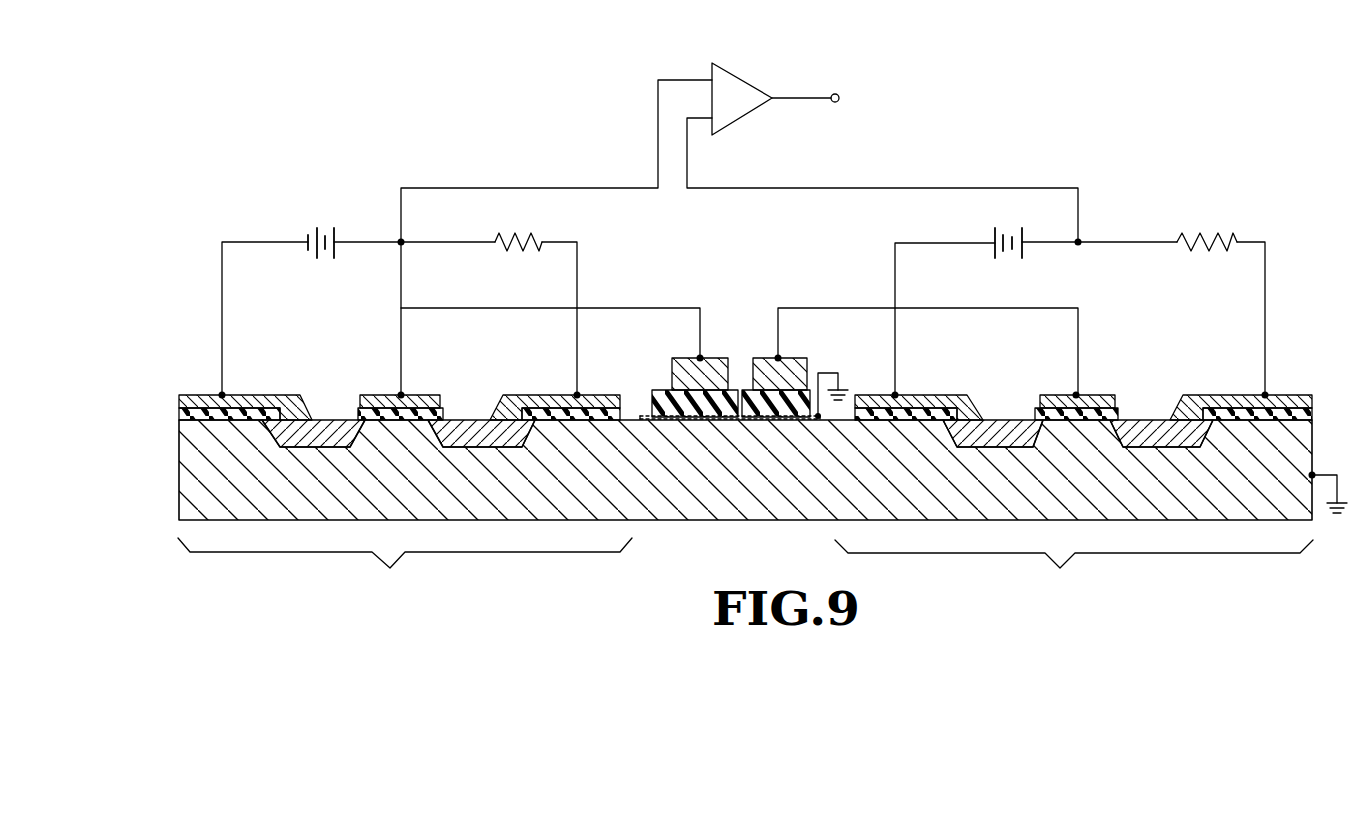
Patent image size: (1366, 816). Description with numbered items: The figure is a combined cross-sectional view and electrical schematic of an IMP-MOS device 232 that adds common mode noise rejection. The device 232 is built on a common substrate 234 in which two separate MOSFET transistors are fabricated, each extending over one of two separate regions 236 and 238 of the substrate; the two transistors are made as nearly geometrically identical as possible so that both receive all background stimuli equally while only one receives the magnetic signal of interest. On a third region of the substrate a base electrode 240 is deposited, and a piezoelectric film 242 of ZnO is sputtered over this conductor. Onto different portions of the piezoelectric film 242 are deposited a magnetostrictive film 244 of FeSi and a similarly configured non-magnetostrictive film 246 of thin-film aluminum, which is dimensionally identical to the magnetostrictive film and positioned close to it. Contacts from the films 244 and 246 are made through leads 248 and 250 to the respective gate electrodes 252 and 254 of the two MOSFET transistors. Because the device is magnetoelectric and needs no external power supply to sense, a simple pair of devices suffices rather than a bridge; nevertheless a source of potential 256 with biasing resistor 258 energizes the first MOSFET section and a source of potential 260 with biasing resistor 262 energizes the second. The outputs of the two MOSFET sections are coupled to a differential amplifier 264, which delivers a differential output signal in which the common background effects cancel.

The device 232 is at (298, 184).
The common substrate 234 is at (691, 512).
The region of the substrate 236 is at (405, 473).
The region of the substrate 238 is at (1074, 473).
The base electrode 240 is at (740, 417).
The piezoelectric film 242 is at (650, 398).
The magnetostrictive film 244 is at (677, 358).
The non-magnetostrictive film 246 is at (793, 357).
The lead 248 is at (623, 308).
The lead 250 is at (850, 308).
The gate electrode 252 is at (427, 395).
The gate electrode 254 is at (1105, 395).
The source of potential 256 is at (333, 232).
The biasing resistor 258 is at (538, 240).
The source of potential 260 is at (993, 242).
The biasing resistor 262 is at (1208, 237).
The differential amplifier 264 is at (747, 88).